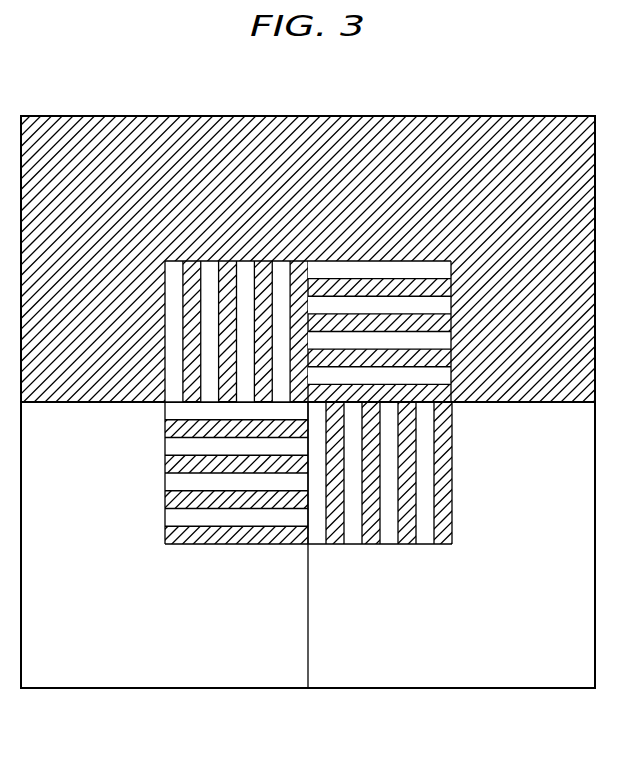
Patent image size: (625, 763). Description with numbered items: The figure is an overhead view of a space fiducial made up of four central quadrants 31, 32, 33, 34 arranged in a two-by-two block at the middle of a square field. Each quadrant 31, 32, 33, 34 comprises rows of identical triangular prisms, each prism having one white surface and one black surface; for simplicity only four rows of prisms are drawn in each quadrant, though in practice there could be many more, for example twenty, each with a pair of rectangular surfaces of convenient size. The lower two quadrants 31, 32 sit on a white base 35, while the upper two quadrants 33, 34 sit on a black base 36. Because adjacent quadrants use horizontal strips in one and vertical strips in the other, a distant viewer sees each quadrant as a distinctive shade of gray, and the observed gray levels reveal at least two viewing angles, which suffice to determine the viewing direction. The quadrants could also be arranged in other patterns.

The central quadrant 31 is at (430, 538).
The central quadrant 32 is at (235, 538).
The central quadrant 33 is at (182, 391).
The central quadrant 34 is at (436, 357).
The white base 35 is at (287, 680).
The black base 36 is at (352, 116).